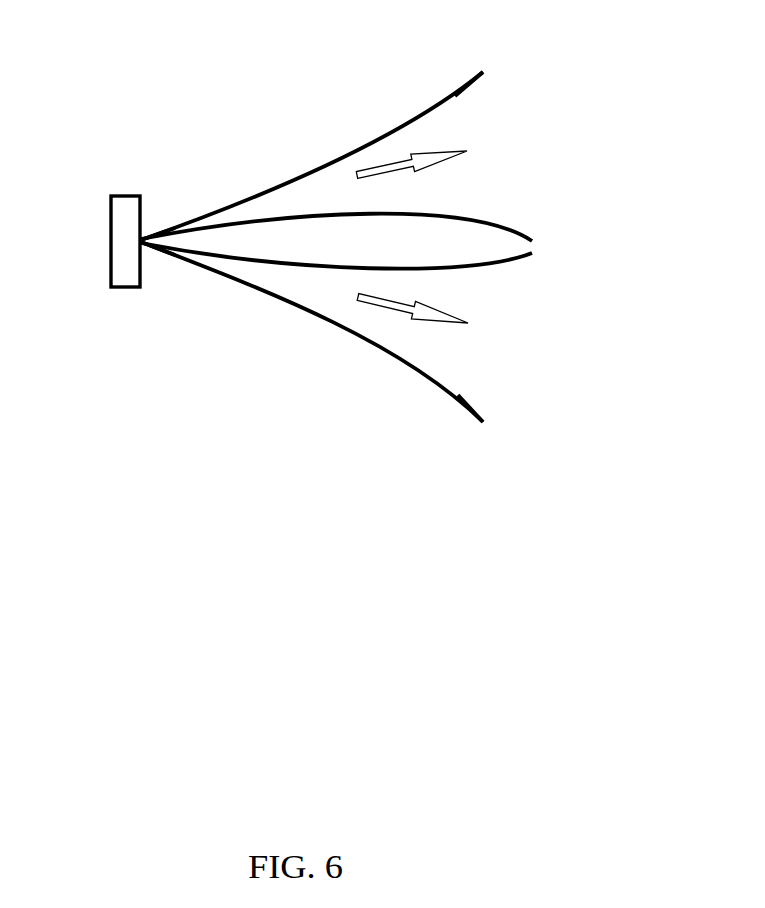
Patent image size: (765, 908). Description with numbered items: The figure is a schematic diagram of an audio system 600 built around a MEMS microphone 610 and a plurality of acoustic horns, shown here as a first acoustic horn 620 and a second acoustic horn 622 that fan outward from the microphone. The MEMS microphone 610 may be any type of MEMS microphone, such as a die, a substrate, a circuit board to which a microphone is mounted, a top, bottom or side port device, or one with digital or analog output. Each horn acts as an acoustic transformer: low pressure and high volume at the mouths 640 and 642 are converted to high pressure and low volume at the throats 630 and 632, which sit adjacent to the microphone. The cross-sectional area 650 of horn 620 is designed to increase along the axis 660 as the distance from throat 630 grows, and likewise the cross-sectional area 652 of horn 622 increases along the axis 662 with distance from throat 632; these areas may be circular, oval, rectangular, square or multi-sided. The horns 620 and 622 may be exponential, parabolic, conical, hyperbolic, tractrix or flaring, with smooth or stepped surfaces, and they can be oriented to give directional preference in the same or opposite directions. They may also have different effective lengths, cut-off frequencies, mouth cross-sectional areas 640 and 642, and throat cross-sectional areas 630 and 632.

The audio system 600 is at (212, 487).
The MEMS microphone 610 is at (121, 248).
The acoustic horn 620 is at (425, 115).
The acoustic horn 622 is at (427, 370).
The throat 630 is at (143, 236).
The throat 632 is at (143, 247).
The mouth 640 is at (493, 87).
The mouth 642 is at (495, 397).
The cross-sectional area 650 is at (414, 150).
The cross-sectional area 652 is at (415, 329).
The axis 660 is at (467, 152).
The axis 662 is at (468, 323).